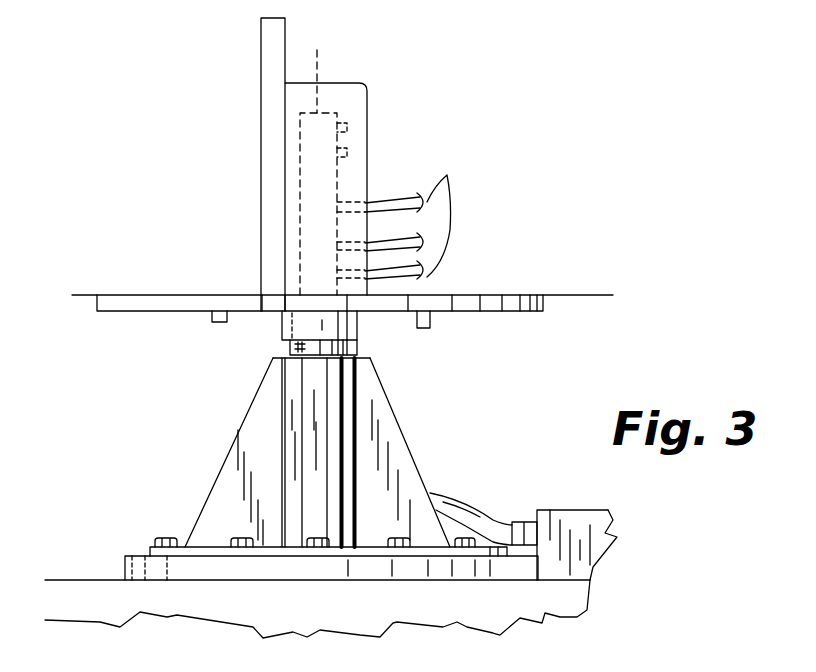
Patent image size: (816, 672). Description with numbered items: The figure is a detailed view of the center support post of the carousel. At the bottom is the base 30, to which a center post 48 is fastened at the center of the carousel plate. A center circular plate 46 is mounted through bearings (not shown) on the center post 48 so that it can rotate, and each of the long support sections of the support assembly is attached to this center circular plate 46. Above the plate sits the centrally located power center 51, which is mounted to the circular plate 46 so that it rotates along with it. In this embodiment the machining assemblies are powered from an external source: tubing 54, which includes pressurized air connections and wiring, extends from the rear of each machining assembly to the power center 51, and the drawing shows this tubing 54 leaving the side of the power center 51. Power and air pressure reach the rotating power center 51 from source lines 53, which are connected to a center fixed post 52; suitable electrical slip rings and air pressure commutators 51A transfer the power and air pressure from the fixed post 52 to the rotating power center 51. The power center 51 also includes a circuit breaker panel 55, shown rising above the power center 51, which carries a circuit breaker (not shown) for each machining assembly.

The base 30 is at (330, 616).
The center circular plate 46 is at (115, 300).
The center post 48 is at (317, 377).
The power center 51 is at (345, 83).
The electrical slip rings and air pressure commutators 51A is at (347, 152).
The center fixed post 52 is at (222, 372).
The source lines 53 is at (442, 497).
The tubing 54 is at (402, 210).
The circuit breaker panel 55 is at (261, 96).